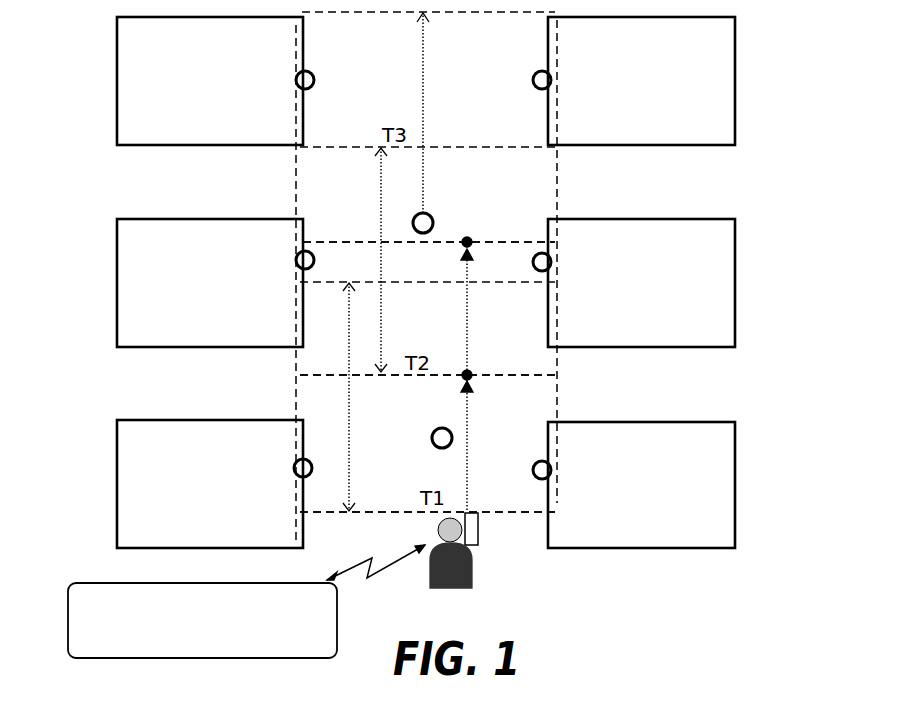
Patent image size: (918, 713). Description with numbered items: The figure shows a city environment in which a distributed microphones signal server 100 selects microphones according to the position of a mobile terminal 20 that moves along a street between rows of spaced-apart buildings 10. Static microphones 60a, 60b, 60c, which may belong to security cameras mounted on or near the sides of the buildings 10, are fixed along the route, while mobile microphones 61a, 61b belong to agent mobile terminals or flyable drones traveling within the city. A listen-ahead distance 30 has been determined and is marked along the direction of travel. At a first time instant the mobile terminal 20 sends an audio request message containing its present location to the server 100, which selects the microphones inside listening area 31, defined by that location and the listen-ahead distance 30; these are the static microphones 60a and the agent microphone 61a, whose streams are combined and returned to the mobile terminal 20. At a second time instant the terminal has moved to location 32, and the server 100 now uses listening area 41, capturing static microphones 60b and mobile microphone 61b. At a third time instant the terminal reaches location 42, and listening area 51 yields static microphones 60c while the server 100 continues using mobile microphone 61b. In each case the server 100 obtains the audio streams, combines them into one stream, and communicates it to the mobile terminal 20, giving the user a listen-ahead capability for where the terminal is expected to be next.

The buildings 10 is at (117, 72).
The mobile terminal 20 is at (478, 533).
The listen-ahead distance 30 is at (424, 107).
The listening area 31 is at (398, 514).
The location 32 is at (474, 371).
The listening area 41 is at (437, 378).
The location 42 is at (474, 237).
The listening area 51 is at (435, 243).
The static microphones 60a is at (295, 466).
The static microphones 60b is at (295, 257).
The static microphones 60c is at (296, 80).
The mobile microphone 61a is at (436, 429).
The mobile microphone 61b is at (433, 216).
The distributed microphones signal server 100 is at (298, 646).